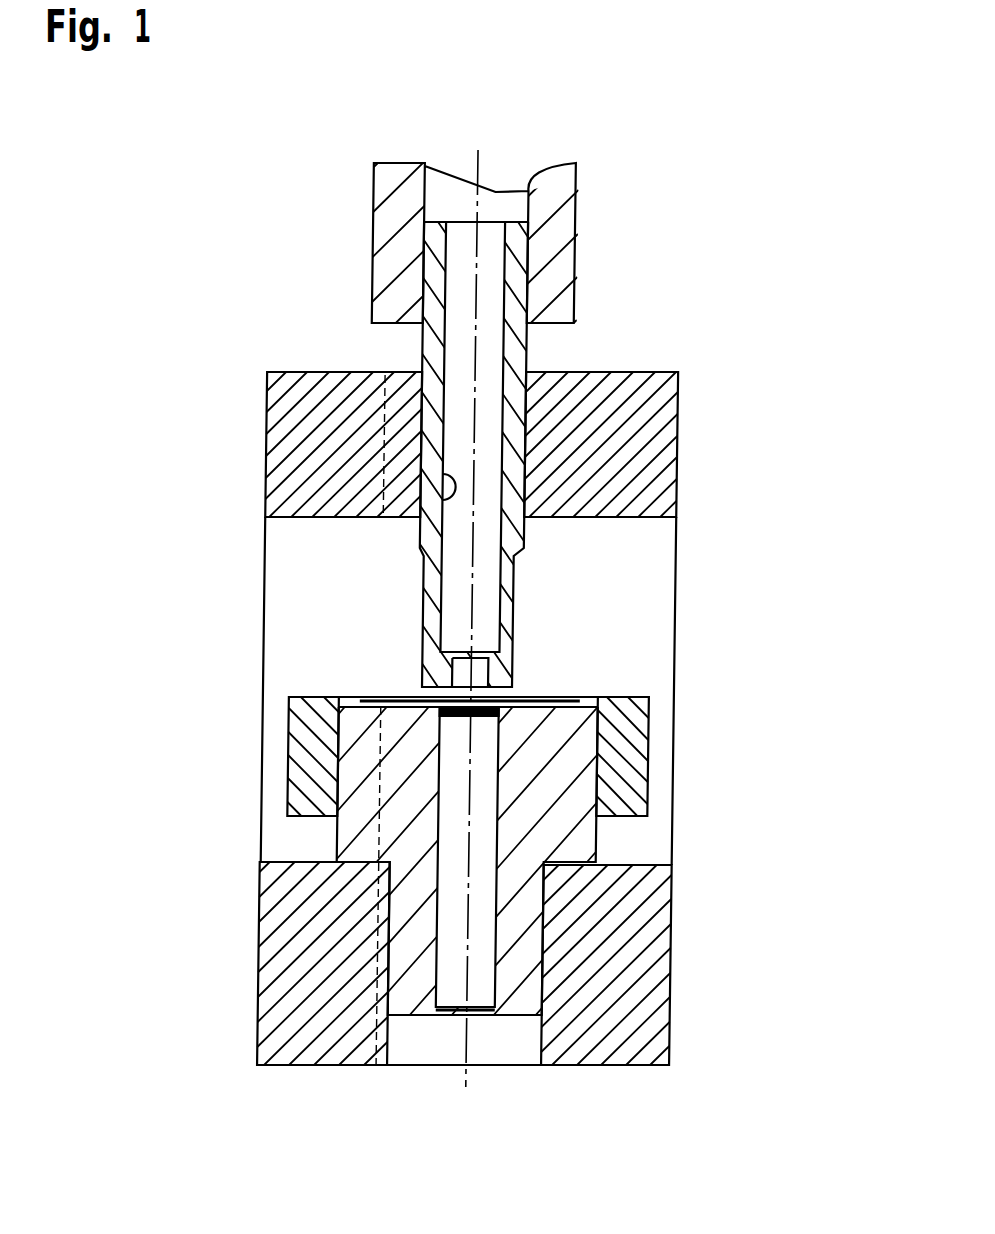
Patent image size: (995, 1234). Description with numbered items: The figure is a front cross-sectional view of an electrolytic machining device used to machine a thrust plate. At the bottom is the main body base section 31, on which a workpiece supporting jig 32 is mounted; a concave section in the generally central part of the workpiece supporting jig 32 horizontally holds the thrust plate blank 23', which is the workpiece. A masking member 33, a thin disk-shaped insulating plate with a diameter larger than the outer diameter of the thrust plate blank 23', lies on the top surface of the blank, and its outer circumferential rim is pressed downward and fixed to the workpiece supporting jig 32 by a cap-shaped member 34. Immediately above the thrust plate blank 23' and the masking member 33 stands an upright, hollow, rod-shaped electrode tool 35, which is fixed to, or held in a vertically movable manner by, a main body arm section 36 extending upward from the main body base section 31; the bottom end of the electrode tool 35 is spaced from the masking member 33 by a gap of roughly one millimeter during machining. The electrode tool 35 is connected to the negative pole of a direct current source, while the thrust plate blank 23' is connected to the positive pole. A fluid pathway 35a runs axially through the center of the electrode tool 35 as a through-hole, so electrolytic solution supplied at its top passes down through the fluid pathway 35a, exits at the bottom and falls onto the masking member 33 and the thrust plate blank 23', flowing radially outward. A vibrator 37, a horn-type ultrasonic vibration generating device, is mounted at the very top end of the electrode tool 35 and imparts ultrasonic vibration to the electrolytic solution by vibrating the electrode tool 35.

The main body base section 31 is at (670, 995).
The workpiece supporting jig 32 is at (597, 838).
The masking member 33 is at (413, 697).
The thrust plate blank 23' is at (595, 652).
The cap-shaped member 34 is at (650, 740).
The electrode tool 35 is at (513, 593).
The fluid pathway 35a is at (447, 478).
The main body arm section 36 is at (677, 447).
The vibrator 37 is at (580, 246).